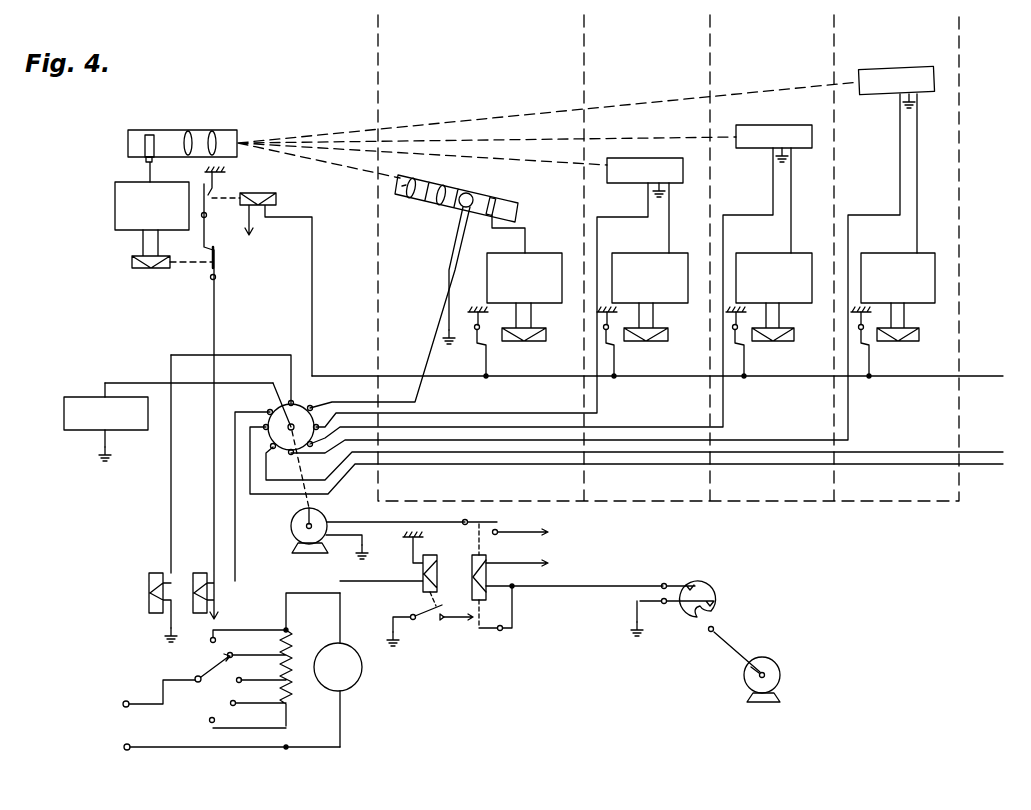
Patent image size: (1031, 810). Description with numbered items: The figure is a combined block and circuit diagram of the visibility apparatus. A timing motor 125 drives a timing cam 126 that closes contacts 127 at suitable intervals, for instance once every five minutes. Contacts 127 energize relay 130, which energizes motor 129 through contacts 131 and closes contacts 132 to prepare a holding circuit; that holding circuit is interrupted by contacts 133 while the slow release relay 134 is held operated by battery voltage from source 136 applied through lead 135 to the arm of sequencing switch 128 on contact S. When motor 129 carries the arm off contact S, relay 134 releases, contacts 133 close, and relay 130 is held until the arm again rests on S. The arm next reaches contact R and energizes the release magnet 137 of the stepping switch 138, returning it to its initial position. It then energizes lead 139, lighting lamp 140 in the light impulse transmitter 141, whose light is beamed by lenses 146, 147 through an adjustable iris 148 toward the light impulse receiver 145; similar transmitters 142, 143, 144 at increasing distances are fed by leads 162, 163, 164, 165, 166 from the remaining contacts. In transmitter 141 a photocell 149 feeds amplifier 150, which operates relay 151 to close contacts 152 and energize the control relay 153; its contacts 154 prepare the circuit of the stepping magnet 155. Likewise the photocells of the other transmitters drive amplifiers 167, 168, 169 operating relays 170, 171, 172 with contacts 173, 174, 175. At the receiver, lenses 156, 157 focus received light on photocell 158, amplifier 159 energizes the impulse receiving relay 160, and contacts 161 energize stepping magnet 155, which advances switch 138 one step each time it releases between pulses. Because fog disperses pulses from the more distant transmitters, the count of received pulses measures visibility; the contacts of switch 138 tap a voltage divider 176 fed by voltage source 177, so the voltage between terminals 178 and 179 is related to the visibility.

The timing motor 125 is at (775, 665).
The timing cam 126 is at (730, 625).
The contacts 127 is at (697, 594).
The sequencing switch 128 is at (294, 421).
The motor 129 is at (328, 516).
The relay 130 is at (487, 560).
The contacts 131 is at (500, 528).
The contacts 132 is at (470, 622).
The contacts 133 is at (424, 624).
The slow release relay 134 is at (437, 557).
The lead 135 is at (258, 381).
The source 136 is at (133, 430).
The release magnet 137 is at (152, 573).
The stepping switch 138 is at (210, 667).
The lead 139 is at (397, 402).
The lamp 140 is at (461, 205).
The light impulse transmitter 141 is at (518, 212).
The light transmitter 142 is at (646, 160).
The light transmitter 143 is at (770, 125).
The light transmitter 144 is at (890, 68).
The light impulse receiver 145 is at (163, 130).
The lens 146 is at (443, 187).
The lens 147 is at (408, 181).
The adjustable iris 148 is at (412, 199).
The photocell 149 is at (493, 200).
The amplifier 150 is at (532, 253).
The relay 151 is at (523, 341).
The contacts 152 is at (484, 345).
The control relay 153 is at (256, 189).
The contacts 154 is at (204, 188).
The stepping magnet 155 is at (200, 573).
The lens 156 is at (220, 126).
The lens 157 is at (189, 126).
The photocell 158 is at (145, 134).
The amplifier 159 is at (115, 193).
The impulse receiving relay 160 is at (132, 261).
The contacts 161 is at (213, 256).
The lead 162 is at (490, 414).
The lead 163 is at (662, 428).
The lead 164 is at (797, 440).
The lead 165 is at (907, 446).
The lead 166 is at (884, 465).
The amplifier 167 is at (644, 253).
The amplifier 168 is at (765, 249).
The amplifier 169 is at (904, 253).
The relay 170 is at (660, 341).
The relay 171 is at (783, 341).
The relay 172 is at (910, 341).
The contacts 173 is at (614, 346).
The contacts 174 is at (743, 346).
The contacts 175 is at (869, 346).
The voltage divider 176 is at (287, 643).
The voltage source 177 is at (345, 644).
The terminal 178 is at (126, 700).
The terminal 179 is at (127, 743).